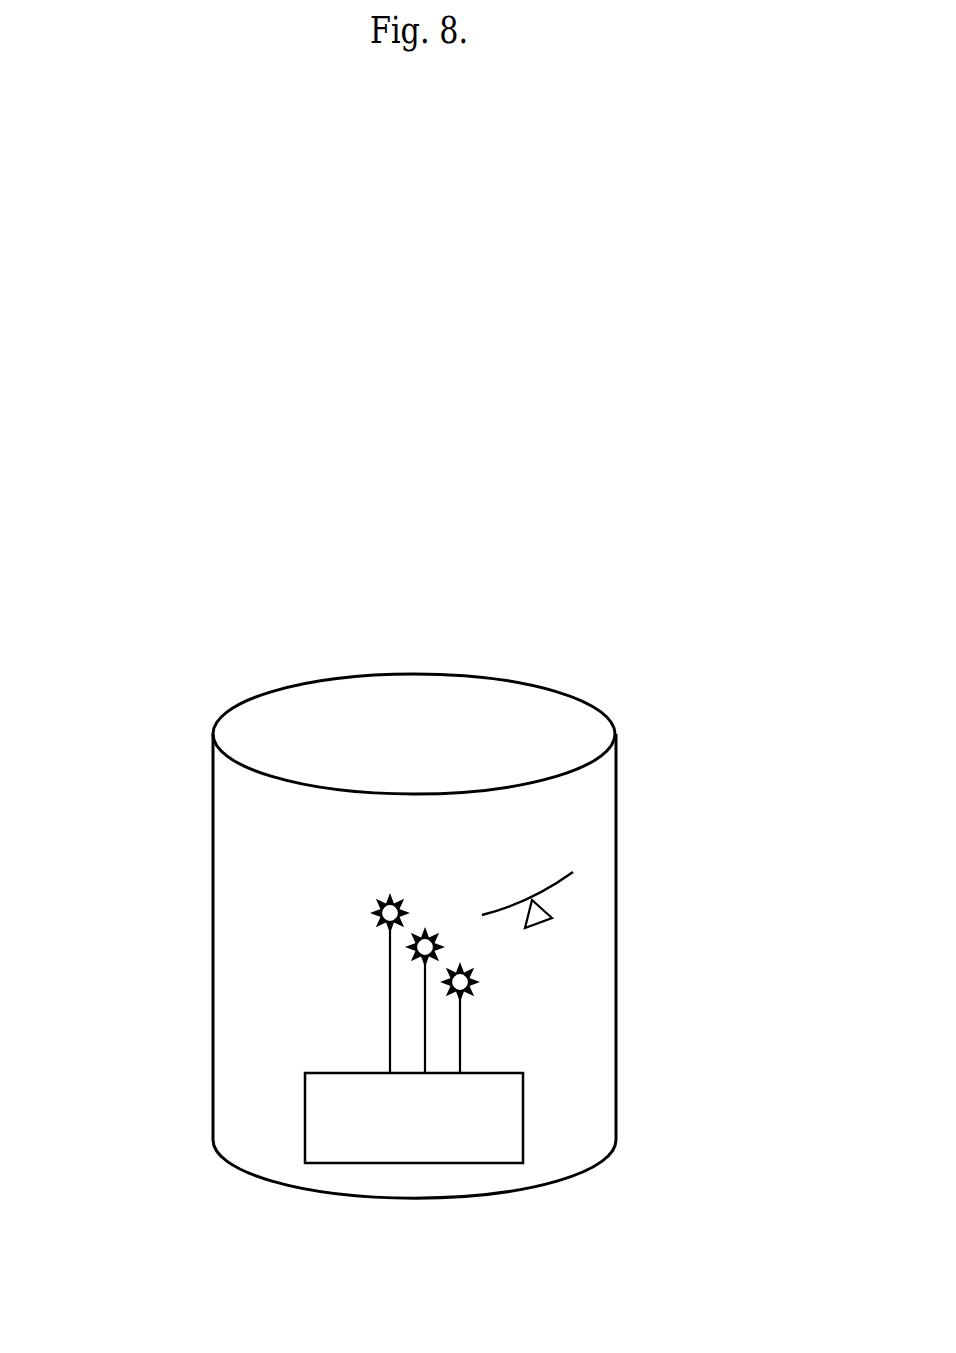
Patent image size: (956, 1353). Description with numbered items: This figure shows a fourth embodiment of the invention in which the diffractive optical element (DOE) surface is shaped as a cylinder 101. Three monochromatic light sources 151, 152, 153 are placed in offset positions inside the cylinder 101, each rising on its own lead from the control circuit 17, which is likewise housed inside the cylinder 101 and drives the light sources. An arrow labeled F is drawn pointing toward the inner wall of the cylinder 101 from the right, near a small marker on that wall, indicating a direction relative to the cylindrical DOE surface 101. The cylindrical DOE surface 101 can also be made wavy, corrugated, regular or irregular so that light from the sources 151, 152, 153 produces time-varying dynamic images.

The cylinder 101 is at (525, 690).
The monochromatic light source 151 is at (357, 903).
The monochromatic light source 152 is at (403, 967).
The monochromatic light source 153 is at (483, 988).
The control circuit 17 is at (415, 1155).
The fluid flow direction F is at (588, 898).